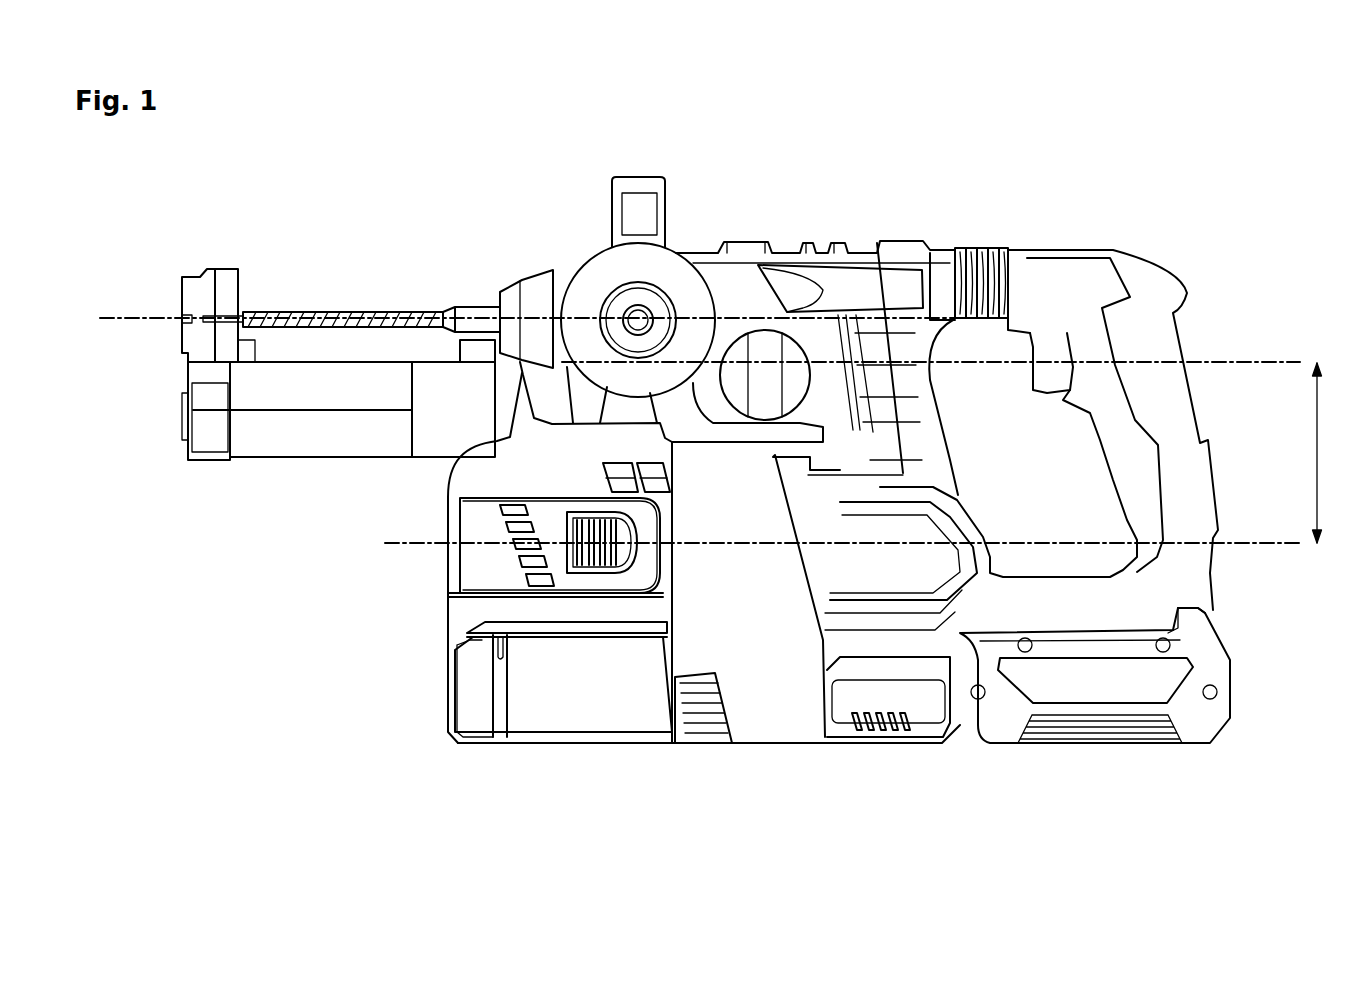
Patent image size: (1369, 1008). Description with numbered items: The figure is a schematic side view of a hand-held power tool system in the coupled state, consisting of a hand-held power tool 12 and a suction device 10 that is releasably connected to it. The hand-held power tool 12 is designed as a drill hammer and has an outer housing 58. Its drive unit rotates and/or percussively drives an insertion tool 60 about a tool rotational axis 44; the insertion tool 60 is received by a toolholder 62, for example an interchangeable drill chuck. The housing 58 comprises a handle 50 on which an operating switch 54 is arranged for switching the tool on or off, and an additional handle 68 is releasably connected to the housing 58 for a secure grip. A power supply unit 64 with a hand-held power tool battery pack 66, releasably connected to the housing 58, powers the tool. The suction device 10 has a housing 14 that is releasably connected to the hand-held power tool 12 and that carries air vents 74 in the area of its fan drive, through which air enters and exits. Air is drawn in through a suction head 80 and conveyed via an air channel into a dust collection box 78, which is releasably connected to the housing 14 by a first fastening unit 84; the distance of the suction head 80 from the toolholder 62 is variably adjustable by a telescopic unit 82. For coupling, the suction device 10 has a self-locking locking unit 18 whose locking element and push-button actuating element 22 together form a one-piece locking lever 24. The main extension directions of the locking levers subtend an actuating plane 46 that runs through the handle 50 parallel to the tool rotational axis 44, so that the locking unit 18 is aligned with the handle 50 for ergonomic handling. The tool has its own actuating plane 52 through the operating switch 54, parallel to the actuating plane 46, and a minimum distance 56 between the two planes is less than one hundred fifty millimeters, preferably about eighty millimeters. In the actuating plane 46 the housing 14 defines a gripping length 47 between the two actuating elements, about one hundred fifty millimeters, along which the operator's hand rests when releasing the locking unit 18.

The suction device 10 is at (423, 723).
The hand-held power tool 12 is at (970, 233).
The housing 14 is at (773, 642).
The locking unit 18 is at (520, 560).
The actuating element 22 is at (560, 649).
The locking lever 24 is at (567, 598).
The tool rotational axis 44 is at (115, 317).
The actuating plane 46 is at (1285, 547).
The gripping length 47 is at (540, 562).
The handle 50 is at (1182, 427).
The actuating plane 52 is at (1250, 360).
The operating switch 54 is at (1050, 347).
The minimum distance 56 is at (1317, 470).
The housing 58 is at (928, 642).
The insertion tool 60 is at (331, 313).
The toolholder 62 is at (532, 297).
The power supply unit 64 is at (1212, 611).
The hand-held power tool battery pack 66 is at (1097, 692).
The additional handle 68 is at (603, 270).
The air vents 74 is at (603, 470).
The dust collection box 78 is at (560, 693).
The suction head 80 is at (227, 283).
The telescopic unit 82 is at (338, 378).
The first fastening unit 84 is at (698, 757).